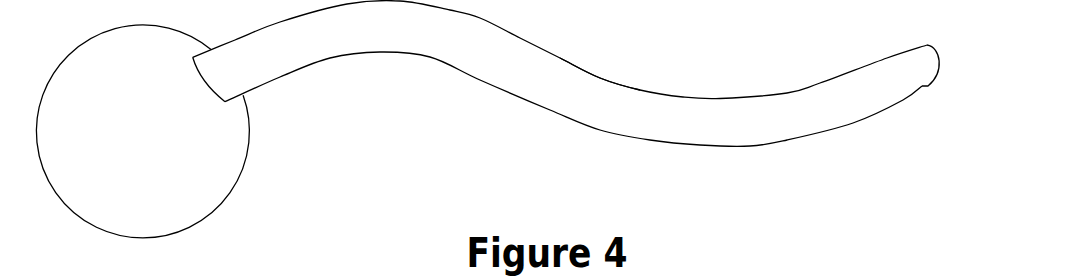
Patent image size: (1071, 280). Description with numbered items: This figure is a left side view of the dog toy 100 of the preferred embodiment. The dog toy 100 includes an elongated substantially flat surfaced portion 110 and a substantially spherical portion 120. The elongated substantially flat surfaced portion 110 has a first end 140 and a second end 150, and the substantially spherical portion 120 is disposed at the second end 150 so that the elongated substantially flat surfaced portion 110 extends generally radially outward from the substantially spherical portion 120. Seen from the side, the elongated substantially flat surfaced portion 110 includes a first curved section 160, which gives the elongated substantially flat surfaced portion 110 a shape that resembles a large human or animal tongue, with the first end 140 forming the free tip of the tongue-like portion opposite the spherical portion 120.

The dog toy 100 is at (487, 119).
The elongated substantially flat surfaced portion 110 is at (560, 74).
The substantially spherical portion 120 is at (142, 131).
The first end 140 is at (930, 43).
The second end 150 is at (230, 79).
The first curved section 160 is at (600, 78).